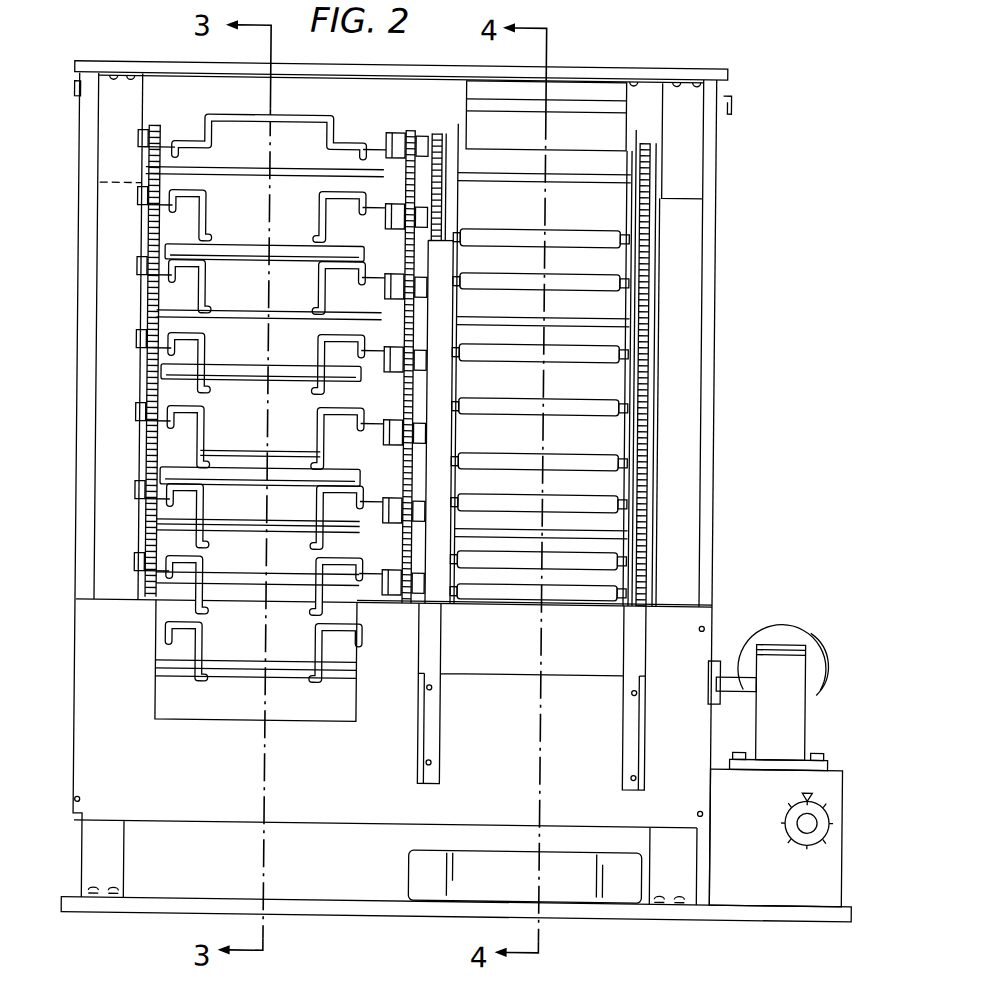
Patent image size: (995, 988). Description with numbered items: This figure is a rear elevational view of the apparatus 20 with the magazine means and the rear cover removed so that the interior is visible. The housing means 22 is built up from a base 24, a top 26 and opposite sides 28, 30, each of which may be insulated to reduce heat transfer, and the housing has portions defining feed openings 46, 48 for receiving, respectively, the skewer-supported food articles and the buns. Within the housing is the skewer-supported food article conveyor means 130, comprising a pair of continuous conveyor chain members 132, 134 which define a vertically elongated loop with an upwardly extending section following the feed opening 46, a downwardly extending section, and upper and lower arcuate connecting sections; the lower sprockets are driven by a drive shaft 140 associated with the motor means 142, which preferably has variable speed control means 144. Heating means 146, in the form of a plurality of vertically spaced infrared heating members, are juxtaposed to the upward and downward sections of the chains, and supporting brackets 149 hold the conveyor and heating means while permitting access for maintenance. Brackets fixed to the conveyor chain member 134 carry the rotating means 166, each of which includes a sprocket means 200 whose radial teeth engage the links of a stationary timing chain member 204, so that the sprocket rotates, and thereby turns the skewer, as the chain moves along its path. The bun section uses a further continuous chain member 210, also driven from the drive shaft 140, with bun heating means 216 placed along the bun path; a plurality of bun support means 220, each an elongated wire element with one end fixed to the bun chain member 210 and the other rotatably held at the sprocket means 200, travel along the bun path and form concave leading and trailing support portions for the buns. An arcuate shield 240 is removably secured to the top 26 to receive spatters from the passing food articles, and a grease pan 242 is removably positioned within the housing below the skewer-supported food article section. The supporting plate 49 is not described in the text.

The apparatus 20 is at (840, 210).
The housing means 22 is at (728, 185).
The base 24 is at (857, 913).
The top 26 is at (650, 68).
The side 28 is at (708, 379).
The side 30 is at (77, 425).
The feed opening 46 is at (524, 660).
The feed opening 48 is at (244, 710).
The left side plate 49 is at (103, 373).
The skewer-supported food article conveyor means 130 is at (674, 455).
The conveyor chain member 132 is at (660, 335).
The conveyor chain member 134 is at (446, 216).
The drive shaft 140 is at (728, 672).
The motor means 142 is at (830, 627).
The variable speed control means 144 is at (835, 800).
The heating means 146 is at (608, 275).
The supporting brackets 149 is at (680, 432).
The rotating means 166 is at (402, 614).
The sprocket means 200 is at (408, 128).
The chain member 204 is at (422, 150).
The continuous chain member 210 is at (128, 309).
The bun heating means 216 is at (236, 362).
The bun support means 220 is at (278, 447).
The arcuate shield 240 is at (575, 110).
The grease pan 242 is at (494, 865).